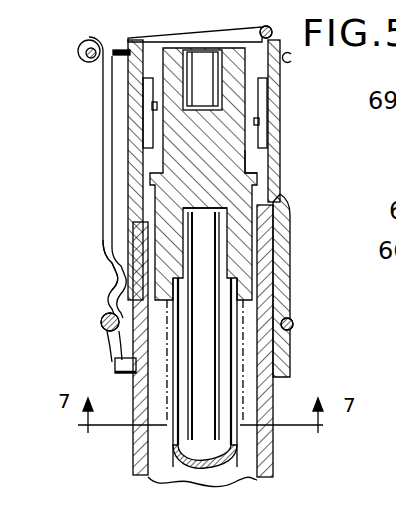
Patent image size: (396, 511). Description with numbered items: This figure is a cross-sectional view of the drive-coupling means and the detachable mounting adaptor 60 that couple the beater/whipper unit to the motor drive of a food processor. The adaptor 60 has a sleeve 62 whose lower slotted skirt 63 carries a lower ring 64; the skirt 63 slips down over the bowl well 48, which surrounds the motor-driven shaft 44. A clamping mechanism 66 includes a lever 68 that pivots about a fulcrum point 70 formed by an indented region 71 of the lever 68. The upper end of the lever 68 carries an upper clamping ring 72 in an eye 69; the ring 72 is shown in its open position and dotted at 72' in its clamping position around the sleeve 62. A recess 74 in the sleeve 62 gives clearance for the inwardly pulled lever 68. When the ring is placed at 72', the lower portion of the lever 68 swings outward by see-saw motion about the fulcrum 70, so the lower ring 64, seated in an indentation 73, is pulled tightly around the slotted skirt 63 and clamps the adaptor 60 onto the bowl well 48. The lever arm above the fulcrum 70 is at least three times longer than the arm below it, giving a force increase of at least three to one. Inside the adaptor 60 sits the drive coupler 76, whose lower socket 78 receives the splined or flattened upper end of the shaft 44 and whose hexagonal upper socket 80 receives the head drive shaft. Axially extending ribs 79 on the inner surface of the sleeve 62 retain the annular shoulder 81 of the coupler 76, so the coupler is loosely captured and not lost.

The motor-driven shaft 44 is at (237, 445).
The bowl well 48 is at (272, 400).
The detachable mounting adaptor 60 is at (310, 167).
The sleeve 62 is at (134, 132).
The lower slotted skirt 63 is at (288, 297).
The lower ring 64 is at (293, 325).
The clamping mechanism 66 is at (96, 200).
The lever 68 is at (108, 162).
The eye 69 is at (80, 46).
The fulcrum point 70 is at (113, 265).
The indented region 71 is at (116, 276).
The upper clamping ring 72 is at (200, 21).
The upper clamping ring in clamping position 72' is at (322, 69).
The indentation 73 is at (110, 333).
The recess 74 is at (120, 52).
The drive coupler 76 is at (225, 162).
The lower socket 78 is at (222, 217).
The ribs 79 is at (150, 104).
The hexagonal upper socket 80 is at (205, 93).
The annular shoulder 81 is at (262, 178).